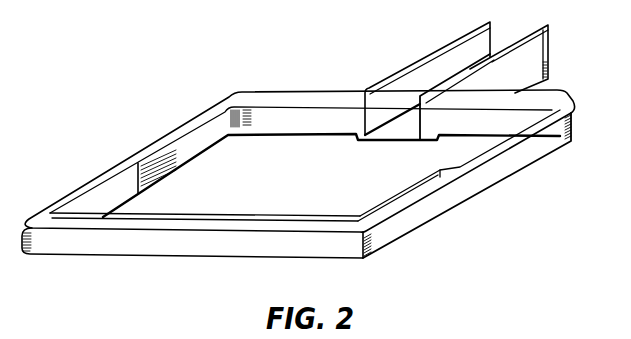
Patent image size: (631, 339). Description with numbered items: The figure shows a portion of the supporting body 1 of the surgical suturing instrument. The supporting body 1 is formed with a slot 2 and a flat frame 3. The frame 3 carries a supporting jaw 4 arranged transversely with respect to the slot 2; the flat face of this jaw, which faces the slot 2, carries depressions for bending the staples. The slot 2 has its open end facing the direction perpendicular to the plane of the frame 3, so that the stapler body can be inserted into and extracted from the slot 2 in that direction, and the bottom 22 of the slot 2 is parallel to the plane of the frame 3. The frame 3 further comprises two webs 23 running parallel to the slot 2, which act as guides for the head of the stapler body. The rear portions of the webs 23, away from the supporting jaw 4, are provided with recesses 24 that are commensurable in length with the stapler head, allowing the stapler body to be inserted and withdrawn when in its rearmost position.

The supporting body 1 is at (534, 90).
The slot 2 is at (420, 73).
The flat frame 3 is at (483, 181).
The supporting jaw 4 is at (121, 226).
The bottom 22 is at (400, 130).
The webs 23 is at (97, 182).
The recesses 24 is at (200, 147).